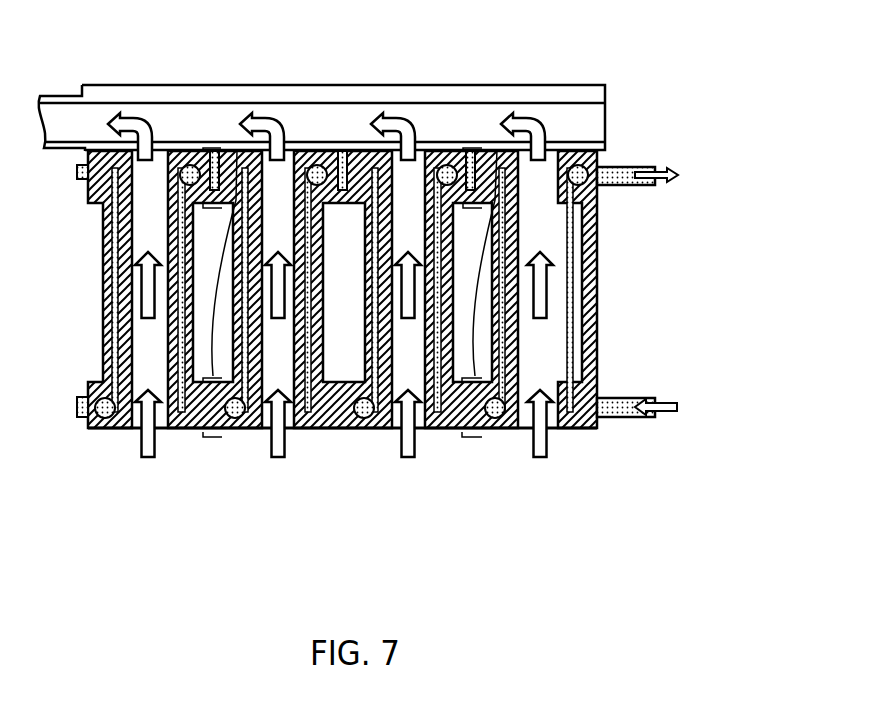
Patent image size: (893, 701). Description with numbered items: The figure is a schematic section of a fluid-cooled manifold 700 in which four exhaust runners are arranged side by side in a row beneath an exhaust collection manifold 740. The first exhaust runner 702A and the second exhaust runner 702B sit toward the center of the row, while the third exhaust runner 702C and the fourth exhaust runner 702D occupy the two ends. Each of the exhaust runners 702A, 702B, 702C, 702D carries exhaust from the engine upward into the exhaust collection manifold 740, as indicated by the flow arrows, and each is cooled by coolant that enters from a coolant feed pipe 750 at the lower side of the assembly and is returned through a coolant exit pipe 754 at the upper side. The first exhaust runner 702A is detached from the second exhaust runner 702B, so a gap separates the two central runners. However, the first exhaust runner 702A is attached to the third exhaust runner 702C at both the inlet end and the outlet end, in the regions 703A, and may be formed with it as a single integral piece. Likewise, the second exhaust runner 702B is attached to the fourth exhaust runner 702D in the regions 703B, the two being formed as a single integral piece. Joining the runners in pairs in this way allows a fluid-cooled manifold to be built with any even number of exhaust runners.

The fluid-cooled manifold 700 is at (715, 74).
The exhaust collection manifold 740 is at (283, 85).
The first exhaust runner 702A is at (304, 452).
The second exhaust runner 702B is at (439, 452).
The third exhaust runner 702C is at (172, 450).
The fourth exhaust runner 702D is at (570, 452).
The regions 703A is at (237, 150).
The regions 703B is at (497, 150).
The coolant exit pipe 754 is at (613, 186).
The coolant feed pipe 750 is at (620, 417).